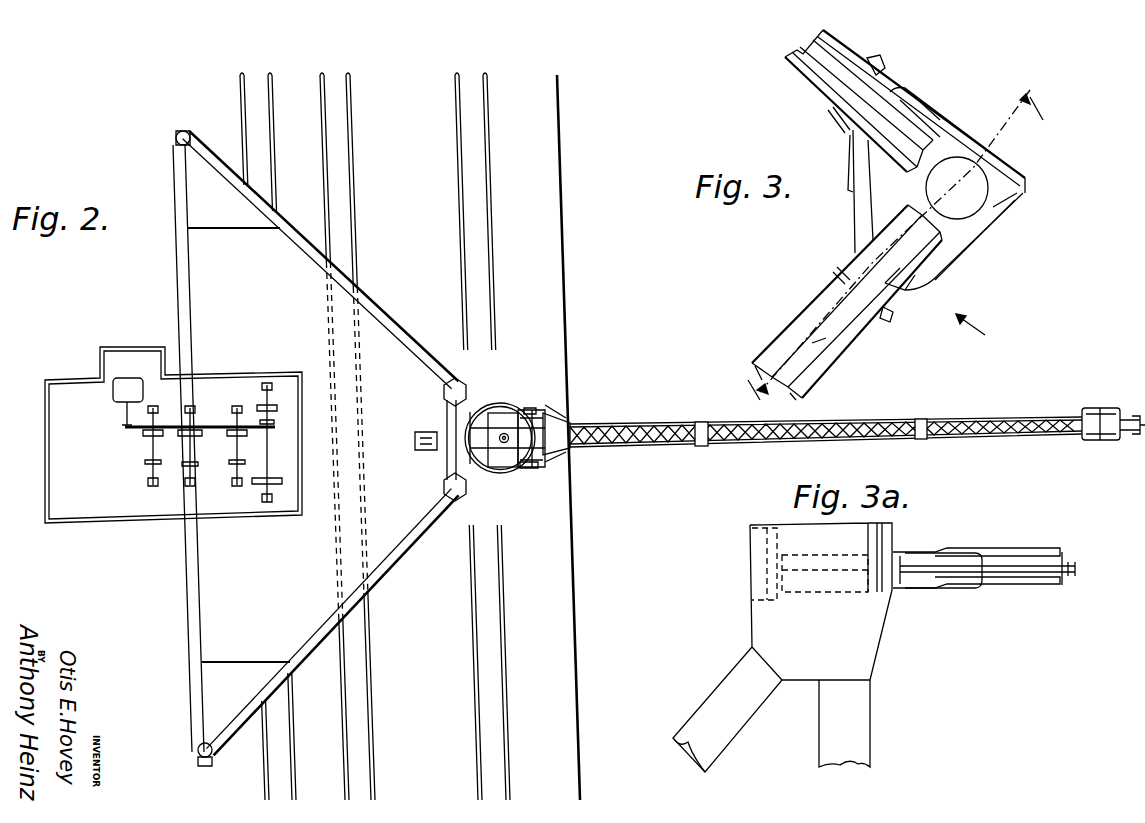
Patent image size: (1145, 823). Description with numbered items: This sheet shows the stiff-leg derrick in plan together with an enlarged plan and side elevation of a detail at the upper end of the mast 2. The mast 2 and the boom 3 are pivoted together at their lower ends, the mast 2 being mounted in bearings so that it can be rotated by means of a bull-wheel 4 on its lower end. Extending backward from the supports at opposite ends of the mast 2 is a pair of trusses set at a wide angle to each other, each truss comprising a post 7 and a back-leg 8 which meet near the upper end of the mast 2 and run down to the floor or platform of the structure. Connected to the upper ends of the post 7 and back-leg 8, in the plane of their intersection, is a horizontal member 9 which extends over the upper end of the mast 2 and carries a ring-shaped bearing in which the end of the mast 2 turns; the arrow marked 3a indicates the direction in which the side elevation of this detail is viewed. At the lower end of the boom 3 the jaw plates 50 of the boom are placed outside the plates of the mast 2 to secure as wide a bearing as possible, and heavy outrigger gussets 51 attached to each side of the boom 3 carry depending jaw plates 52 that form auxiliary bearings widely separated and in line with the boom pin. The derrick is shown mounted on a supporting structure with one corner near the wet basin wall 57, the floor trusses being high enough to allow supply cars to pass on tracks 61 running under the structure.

In FIG. 2, the mast 2 is at (499, 427).
In FIG. 2, the boom 3 is at (857, 420).
In FIG. 2, the bull-wheel 4 is at (507, 474).
In FIG. 3, the bull-wheel 4 is at (894, 242).
In FIG. 3A, the post 7 is at (844, 723).
In FIG. 2, the back-leg 8 is at (414, 334).
In FIG. 3A, the back-leg 8 is at (727, 709).
In FIG. 3, the horizontal member 9 is at (1003, 205).
In FIG. 3A, the horizontal member 9 is at (972, 573).
In FIG. 2, the jaw plates of the boom 50 is at (528, 409).
In FIG. 2, the outrigger gussets 51 is at (573, 459).
In FIG. 2, the depending jaw plates 52 is at (532, 469).
In FIG. 2, the wet basin wall 57 is at (587, 730).
In FIG. 2, the tracks 61 is at (343, 763).
In FIG. 3, the view direction arrow 3a is at (979, 336).